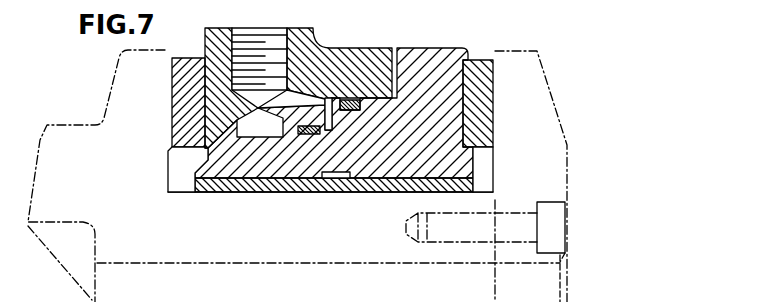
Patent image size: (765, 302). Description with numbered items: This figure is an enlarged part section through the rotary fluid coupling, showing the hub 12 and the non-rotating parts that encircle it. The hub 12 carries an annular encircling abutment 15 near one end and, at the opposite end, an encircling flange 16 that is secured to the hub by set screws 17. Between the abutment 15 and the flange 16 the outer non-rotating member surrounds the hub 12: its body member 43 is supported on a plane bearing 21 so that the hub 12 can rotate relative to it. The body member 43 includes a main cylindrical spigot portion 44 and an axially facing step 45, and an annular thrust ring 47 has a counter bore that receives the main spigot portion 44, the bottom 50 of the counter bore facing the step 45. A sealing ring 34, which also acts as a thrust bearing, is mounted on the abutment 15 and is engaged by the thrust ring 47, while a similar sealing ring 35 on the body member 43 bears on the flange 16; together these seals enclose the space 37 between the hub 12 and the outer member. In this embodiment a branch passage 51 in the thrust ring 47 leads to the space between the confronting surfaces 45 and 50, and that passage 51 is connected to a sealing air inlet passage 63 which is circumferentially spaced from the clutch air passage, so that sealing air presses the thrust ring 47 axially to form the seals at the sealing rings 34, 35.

The inner annular hub 12 is at (190, 248).
The annular encircling abutment 15 is at (118, 95).
The encircling flange 16 is at (554, 86).
The set screws 17 is at (560, 212).
The plane bearing 21 is at (372, 186).
The sealing ring 34 is at (178, 63).
The sealing ring 35 is at (482, 62).
The space 37 is at (173, 186).
The body member 43 is at (397, 174).
The main cylindrical spigot portion 44 is at (437, 53).
The axially facing step 45 is at (344, 114).
The annular thrust ring 47 is at (372, 50).
The bottom of the counter bore 50 is at (314, 128).
The branch passage 51 is at (305, 98).
The sealing air inlet passage 63 is at (238, 35).